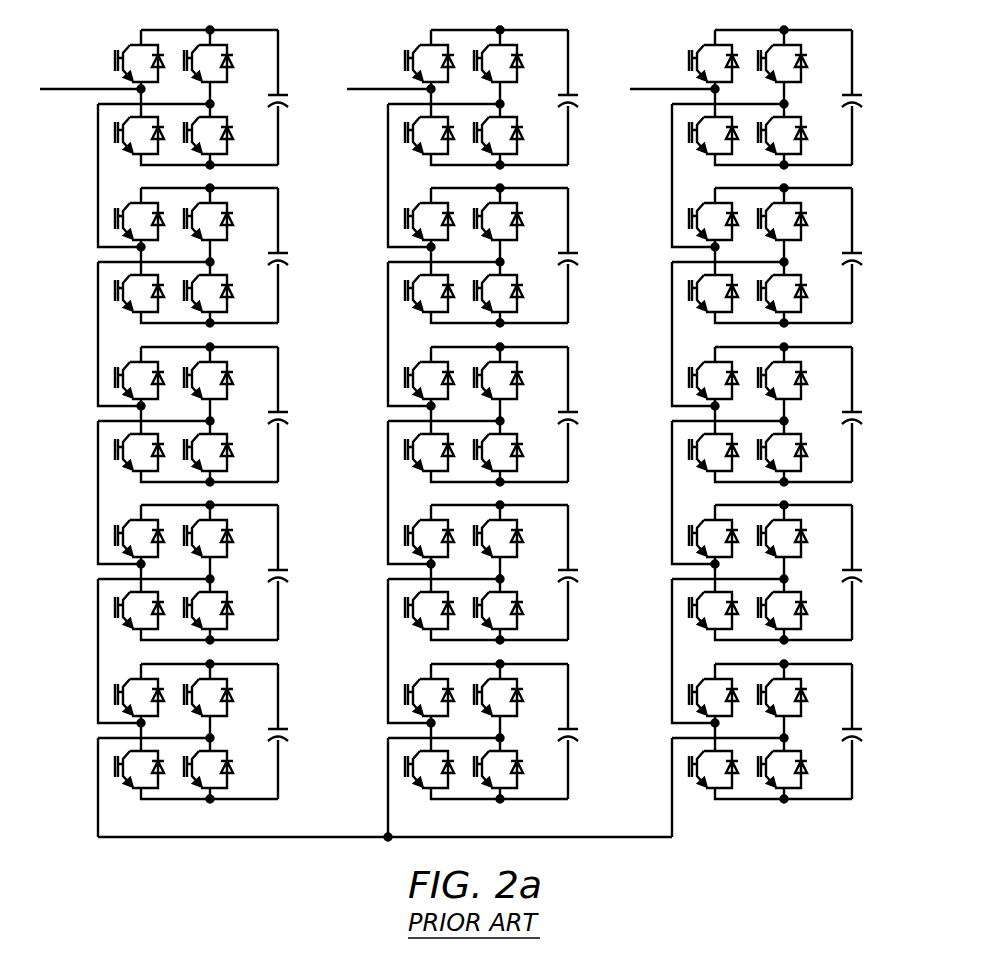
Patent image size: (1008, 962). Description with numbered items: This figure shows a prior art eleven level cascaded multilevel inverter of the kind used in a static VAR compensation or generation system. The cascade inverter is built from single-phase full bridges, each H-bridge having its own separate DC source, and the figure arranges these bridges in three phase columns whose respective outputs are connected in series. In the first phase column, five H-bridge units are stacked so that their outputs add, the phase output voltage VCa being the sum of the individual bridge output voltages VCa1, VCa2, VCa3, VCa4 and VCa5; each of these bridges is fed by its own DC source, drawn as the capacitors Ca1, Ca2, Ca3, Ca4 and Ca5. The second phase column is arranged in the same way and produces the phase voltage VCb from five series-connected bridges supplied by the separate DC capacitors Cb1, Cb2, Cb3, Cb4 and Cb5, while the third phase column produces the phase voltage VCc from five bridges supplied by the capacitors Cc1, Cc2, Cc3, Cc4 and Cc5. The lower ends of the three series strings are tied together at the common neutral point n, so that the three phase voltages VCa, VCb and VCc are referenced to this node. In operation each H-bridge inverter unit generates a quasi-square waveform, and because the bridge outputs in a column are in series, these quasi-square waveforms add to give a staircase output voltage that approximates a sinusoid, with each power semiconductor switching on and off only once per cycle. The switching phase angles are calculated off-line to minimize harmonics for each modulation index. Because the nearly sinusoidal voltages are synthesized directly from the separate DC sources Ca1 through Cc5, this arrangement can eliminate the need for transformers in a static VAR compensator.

The phase a converter output voltage VCa is at (90, 68).
The phase b converter output voltage VCb is at (389, 68).
The phase c converter output voltage VCc is at (672, 68).
The phase a H-bridge cell 1 output voltage VCa1 is at (87, 103).
The phase a H-bridge cell 2 output voltage VCa2 is at (87, 261).
The phase a H-bridge cell 3 output voltage VCa3 is at (87, 420).
The phase a H-bridge cell 4 output voltage VCa4 is at (87, 578).
The phase a H-bridge cell 5 output voltage VCa5 is at (87, 737).
The DC link capacitor, phase a cell 1 Ca1 is at (291, 97).
The DC link capacitor, phase a cell 2 Ca2 is at (291, 255).
The DC link capacitor, phase a cell 3 Ca3 is at (291, 414).
The DC link capacitor, phase a cell 4 Ca4 is at (291, 572).
The DC link capacitor, phase a cell 5 Ca5 is at (291, 731).
The DC link capacitor, phase b cell 1 Cb1 is at (581, 97).
The DC link capacitor, phase b cell 2 Cb2 is at (581, 255).
The DC link capacitor, phase b cell 3 Cb3 is at (581, 414).
The DC link capacitor, phase b cell 4 Cb4 is at (581, 572).
The DC link capacitor, phase b cell 5 Cb5 is at (581, 731).
The DC link capacitor, phase c cell 1 Cc1 is at (865, 97).
The DC link capacitor, phase c cell 2 Cc2 is at (865, 255).
The DC link capacitor, phase c cell 3 Cc3 is at (865, 414).
The DC link capacitor, phase c cell 4 Cc4 is at (865, 572).
The DC link capacitor, phase c cell 5 Cc5 is at (865, 731).
The neutral point n is at (385, 823).